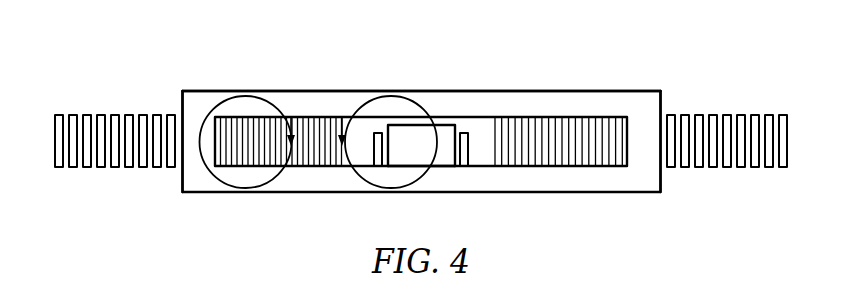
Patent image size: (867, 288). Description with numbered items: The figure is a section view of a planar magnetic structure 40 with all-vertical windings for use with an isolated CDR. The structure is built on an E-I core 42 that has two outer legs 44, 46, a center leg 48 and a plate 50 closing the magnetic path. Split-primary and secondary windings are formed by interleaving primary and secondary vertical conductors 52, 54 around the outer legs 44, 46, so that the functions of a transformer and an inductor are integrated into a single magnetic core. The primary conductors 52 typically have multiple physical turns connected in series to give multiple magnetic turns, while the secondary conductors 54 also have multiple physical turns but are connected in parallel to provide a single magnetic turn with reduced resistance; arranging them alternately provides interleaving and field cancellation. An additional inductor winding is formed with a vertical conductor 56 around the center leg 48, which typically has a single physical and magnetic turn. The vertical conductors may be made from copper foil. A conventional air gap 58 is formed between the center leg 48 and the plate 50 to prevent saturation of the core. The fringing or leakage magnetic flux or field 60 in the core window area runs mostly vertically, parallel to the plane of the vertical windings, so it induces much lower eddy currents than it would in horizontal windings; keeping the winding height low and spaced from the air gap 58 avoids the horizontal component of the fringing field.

The magnetic structure 40 is at (518, 62).
The E-I core 42 is at (297, 180).
The outer leg 44 is at (190, 177).
The outer leg 46 is at (650, 178).
The center leg 48 is at (437, 163).
The plate 50 is at (315, 90).
The primary vertical conductor 52 is at (143, 115).
The secondary vertical conductor 54 is at (116, 115).
The vertical conductor 56 is at (378, 132).
The air gap 58 is at (443, 124).
The magnetic flux or field 60 is at (354, 117).